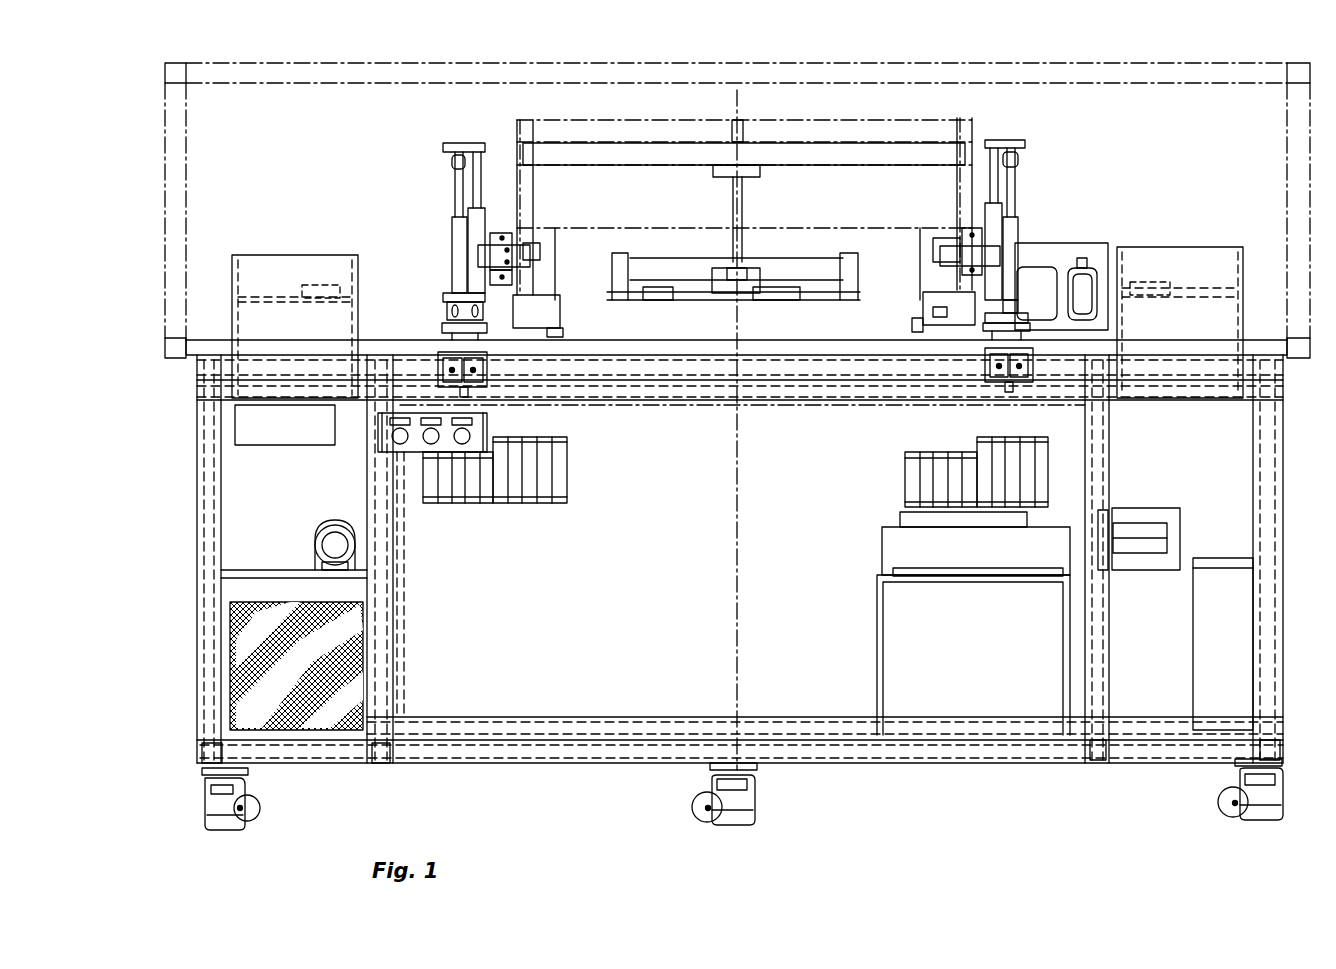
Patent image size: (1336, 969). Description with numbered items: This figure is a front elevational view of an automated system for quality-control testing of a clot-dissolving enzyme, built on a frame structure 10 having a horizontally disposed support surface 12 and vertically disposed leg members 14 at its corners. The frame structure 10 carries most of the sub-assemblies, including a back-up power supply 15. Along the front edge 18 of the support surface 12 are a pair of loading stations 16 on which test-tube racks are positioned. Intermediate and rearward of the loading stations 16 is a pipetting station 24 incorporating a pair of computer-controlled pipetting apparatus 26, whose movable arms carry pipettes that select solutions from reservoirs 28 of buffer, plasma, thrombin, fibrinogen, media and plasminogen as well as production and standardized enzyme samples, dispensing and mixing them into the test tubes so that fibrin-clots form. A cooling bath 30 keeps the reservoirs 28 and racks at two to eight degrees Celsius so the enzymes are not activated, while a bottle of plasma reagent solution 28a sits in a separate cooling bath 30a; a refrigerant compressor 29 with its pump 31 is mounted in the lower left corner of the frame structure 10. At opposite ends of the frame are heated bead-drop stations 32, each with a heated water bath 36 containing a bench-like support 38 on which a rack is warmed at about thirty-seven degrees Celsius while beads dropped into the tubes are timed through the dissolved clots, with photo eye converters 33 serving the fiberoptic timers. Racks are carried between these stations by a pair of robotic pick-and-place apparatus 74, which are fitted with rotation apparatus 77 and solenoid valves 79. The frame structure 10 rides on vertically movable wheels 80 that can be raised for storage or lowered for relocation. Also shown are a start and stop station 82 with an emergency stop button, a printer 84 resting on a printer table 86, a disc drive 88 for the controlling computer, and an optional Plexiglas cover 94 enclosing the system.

The frame structure 10 is at (702, 583).
The support surface 12 is at (400, 340).
The leg members 14 is at (200, 462).
The back-up power supply 15 is at (1232, 558).
The loading stations 16 is at (446, 322).
The front edge 18 is at (662, 340).
The pipetting station 24 is at (782, 113).
The pipetting apparatus 26 is at (744, 191).
The reservoirs 28 is at (750, 265).
The bottle of plasma reagent solution 28a is at (1086, 258).
The refrigerant compressor 29 is at (268, 570).
The cooling bath 30 is at (665, 258).
The cooling bath 30a is at (1091, 251).
The pump 31 is at (335, 520).
The heated bead-drop stations 32 is at (735, 298).
The photo eye converters 33 is at (287, 447).
The heated water bath 36 is at (232, 315).
The bench-like support 38 is at (315, 290).
The robotic pick-and-place apparatus 74 is at (452, 237).
The rotation apparatus 77 is at (488, 372).
The solenoid valves 79 is at (568, 470).
The wheels 80 is at (258, 810).
The start and stop station 82 is at (408, 458).
The printer 84 is at (882, 540).
The printer table 86 is at (877, 637).
The disc drive 88 is at (1140, 510).
The Plexiglas cover 94 is at (1120, 60).